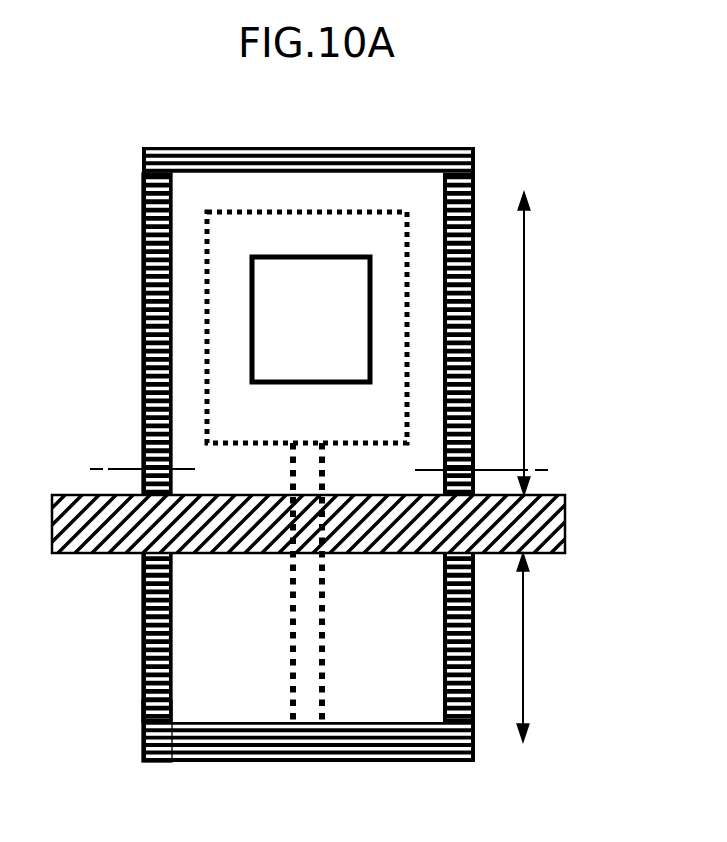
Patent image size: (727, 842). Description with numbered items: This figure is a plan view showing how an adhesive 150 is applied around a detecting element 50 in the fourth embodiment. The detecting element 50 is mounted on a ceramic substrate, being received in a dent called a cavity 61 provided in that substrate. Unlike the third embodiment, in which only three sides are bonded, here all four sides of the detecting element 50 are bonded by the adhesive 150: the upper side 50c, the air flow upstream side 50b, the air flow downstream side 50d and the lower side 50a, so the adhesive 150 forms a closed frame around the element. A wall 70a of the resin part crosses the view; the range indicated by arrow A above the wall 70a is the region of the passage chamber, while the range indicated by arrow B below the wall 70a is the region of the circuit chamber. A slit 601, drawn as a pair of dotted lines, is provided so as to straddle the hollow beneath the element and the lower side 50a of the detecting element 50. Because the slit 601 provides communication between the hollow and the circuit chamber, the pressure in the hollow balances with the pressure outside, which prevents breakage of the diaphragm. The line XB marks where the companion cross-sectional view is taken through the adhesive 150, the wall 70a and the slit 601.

The detecting element 50 is at (325, 457).
The lower side of detecting element 50a is at (210, 727).
The air flow upstream side of detecting element 50b is at (143, 425).
The upper side of detecting element 50c is at (312, 172).
The air flow downstream side of detecting element 50d is at (455, 258).
The adhesive 150 is at (147, 352).
The cavity 61 is at (147, 722).
The slit 601 is at (307, 703).
The wall of resin part 70a is at (540, 523).
The arrow A is at (525, 355).
The arrow B is at (525, 648).
The line XB- XB is at (314, 471).